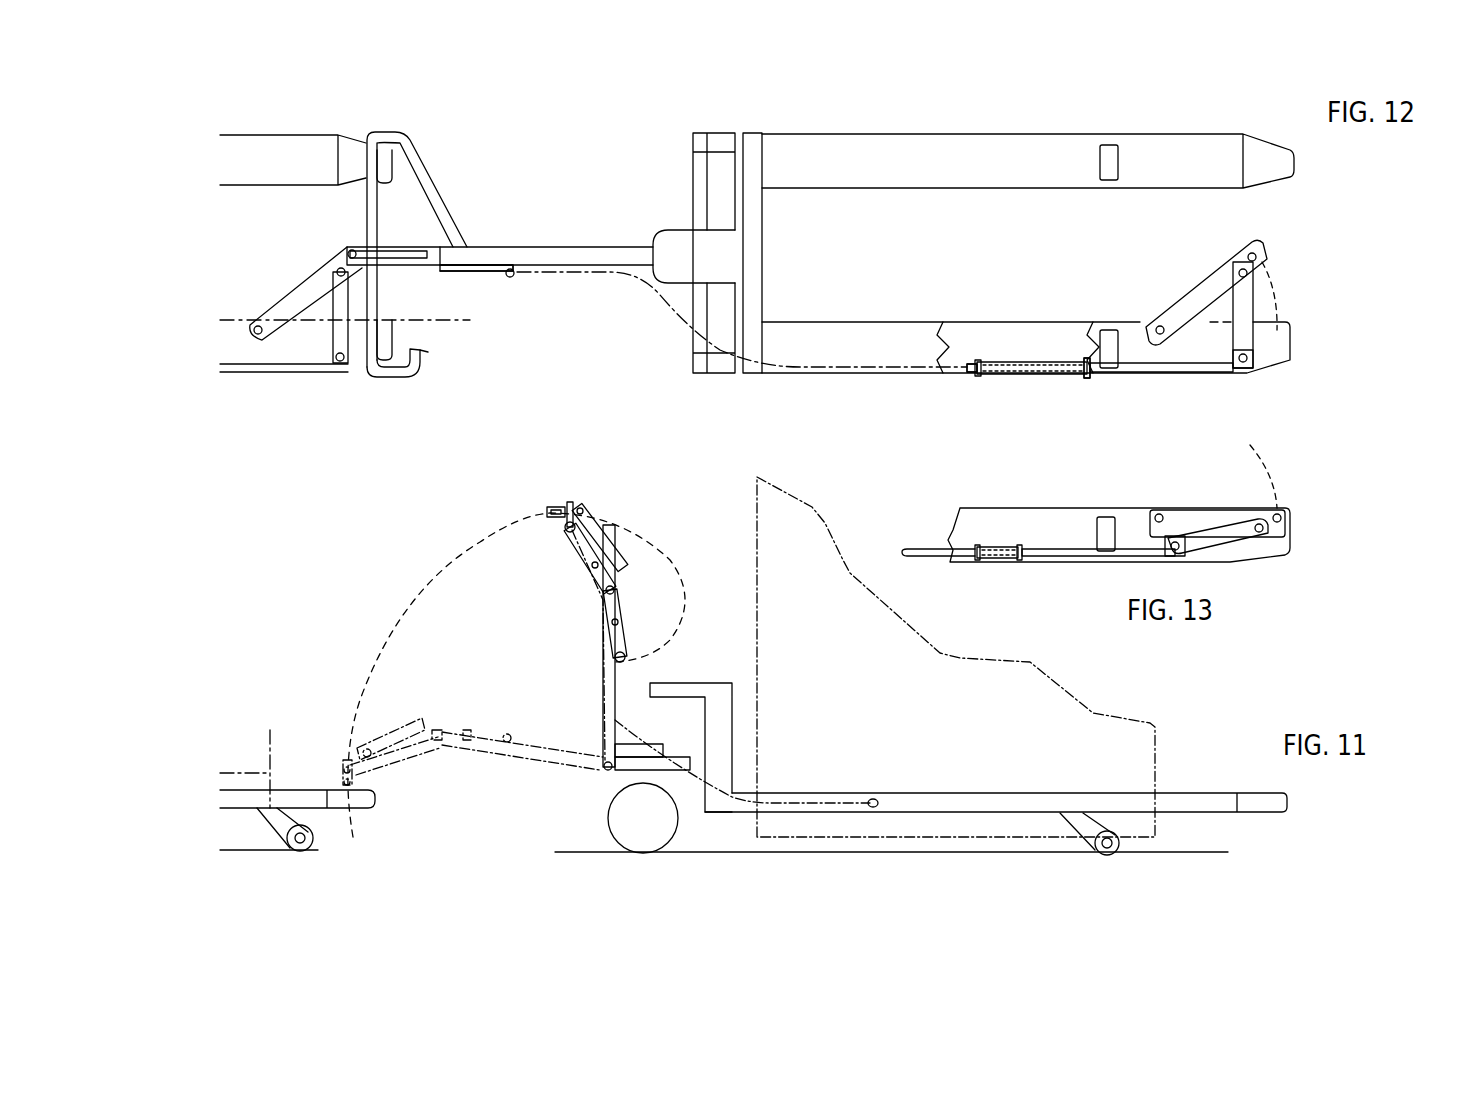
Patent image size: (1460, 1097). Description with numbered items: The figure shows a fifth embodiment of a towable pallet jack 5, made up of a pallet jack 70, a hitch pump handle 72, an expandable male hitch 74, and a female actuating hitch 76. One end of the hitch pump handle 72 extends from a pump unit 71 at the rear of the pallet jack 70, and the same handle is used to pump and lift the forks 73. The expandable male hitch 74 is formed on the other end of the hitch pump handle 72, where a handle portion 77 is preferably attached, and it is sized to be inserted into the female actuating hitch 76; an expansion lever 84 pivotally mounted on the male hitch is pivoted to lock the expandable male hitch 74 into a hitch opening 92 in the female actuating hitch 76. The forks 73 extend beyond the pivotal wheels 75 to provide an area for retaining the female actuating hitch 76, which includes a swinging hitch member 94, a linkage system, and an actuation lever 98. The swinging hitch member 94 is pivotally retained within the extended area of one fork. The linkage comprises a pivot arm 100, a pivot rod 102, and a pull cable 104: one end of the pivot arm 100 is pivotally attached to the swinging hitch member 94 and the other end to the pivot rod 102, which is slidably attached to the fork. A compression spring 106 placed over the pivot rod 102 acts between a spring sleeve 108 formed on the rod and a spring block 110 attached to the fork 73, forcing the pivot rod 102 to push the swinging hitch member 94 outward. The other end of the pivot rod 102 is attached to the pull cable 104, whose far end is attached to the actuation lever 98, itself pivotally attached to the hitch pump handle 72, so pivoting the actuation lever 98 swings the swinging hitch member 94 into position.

In FIG. 12, the towable pallet jack 5 is at (855, 130).
In FIG. 11, the towable pallet jack 5 is at (970, 690).
In FIG. 12, the pallet jack 70 is at (805, 133).
In FIG. 11, the pallet jack 70 is at (670, 676).
In FIG. 12, the pump unit 71 is at (680, 243).
In FIG. 12, the hitch pump handle 72 is at (532, 247).
In FIG. 12, the forks 73 is at (1035, 152).
In FIG. 11, the expandable male hitch 74 is at (558, 505).
In FIG. 11, the pivotal wheels 75 is at (1085, 827).
In FIG. 12, the female actuating hitch 76 is at (1217, 267).
In FIG. 12, the handle portion 77 is at (420, 152).
In FIG. 11, the expansion lever 84 is at (602, 530).
In FIG. 12, the hitch opening 92 is at (1257, 250).
In FIG. 12, the swinging hitch member 94 is at (1187, 298).
In FIG. 12, the actuation lever 98 is at (483, 266).
In FIG. 11, the actuation lever 98 is at (618, 603).
In FIG. 12, the pivot arm 100 is at (1243, 312).
In FIG. 12, the pivot rod 102 is at (1145, 368).
In FIG. 12, the pull cable 104 is at (683, 317).
In FIG. 11, the pull cable 104 is at (790, 800).
In FIG. 12, the compression spring 106 is at (1055, 375).
In FIG. 12, the spring sleeve 108 is at (1087, 365).
In FIG. 13, the spring sleeve 108 is at (1020, 548).
In FIG. 12, the spring block 110 is at (978, 362).
In FIG. 13, the spring block 110 is at (975, 548).